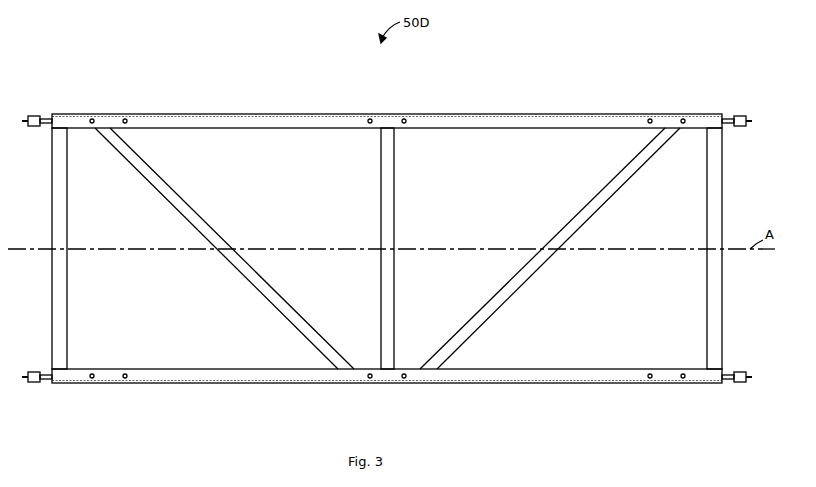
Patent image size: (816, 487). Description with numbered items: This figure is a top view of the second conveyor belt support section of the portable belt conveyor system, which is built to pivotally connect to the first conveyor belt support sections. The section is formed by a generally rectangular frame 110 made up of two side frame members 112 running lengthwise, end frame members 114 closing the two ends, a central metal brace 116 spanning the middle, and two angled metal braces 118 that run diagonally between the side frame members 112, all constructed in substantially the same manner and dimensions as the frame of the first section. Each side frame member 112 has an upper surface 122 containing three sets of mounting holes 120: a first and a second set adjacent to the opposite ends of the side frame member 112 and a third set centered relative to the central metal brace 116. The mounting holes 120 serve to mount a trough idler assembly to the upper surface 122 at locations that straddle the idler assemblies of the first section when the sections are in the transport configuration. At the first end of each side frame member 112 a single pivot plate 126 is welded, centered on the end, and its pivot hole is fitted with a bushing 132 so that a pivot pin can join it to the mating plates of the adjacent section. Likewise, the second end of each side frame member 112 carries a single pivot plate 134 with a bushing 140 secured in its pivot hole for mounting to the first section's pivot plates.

The frame 110 is at (437, 114).
The side frame member 112 is at (585, 122).
The end frame member 114 is at (60, 217).
The central metal brace 116 is at (383, 193).
The angled metal brace 118 is at (272, 300).
The mounting holes 120 is at (128, 112).
The upper surface 122 is at (269, 124).
The pivot plate 126 is at (43, 250).
The bushing 132 is at (34, 384).
The pivot plate 134 is at (745, 254).
The bushing 140 is at (745, 126).